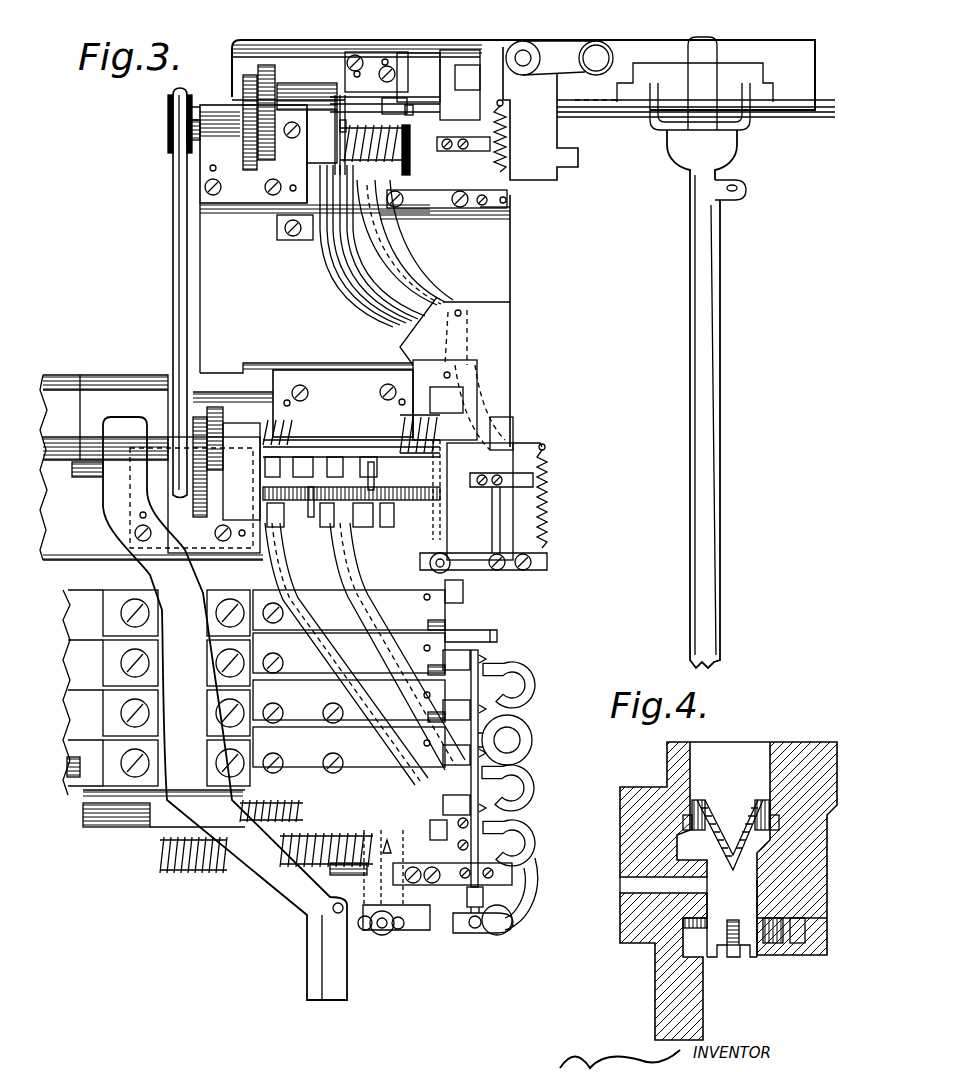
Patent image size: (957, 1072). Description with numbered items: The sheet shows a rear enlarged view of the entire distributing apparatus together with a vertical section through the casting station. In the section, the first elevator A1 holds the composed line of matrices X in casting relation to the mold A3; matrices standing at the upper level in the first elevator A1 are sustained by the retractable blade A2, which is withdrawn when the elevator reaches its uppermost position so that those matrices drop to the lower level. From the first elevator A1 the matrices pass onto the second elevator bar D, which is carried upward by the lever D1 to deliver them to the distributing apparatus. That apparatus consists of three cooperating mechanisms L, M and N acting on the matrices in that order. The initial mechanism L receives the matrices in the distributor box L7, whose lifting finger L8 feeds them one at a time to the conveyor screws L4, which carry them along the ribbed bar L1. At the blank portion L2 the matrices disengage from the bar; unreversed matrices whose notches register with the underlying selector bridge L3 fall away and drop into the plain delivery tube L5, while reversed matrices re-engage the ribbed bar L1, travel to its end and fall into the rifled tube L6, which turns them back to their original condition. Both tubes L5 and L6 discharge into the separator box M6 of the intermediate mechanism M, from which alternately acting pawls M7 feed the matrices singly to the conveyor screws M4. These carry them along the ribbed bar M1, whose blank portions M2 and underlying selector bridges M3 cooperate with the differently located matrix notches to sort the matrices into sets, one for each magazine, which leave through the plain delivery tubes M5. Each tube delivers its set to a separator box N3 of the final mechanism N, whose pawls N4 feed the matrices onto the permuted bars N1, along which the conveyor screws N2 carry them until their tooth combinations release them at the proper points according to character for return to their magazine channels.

In FIG. 3, the second elevator bar D is at (628, 118).
In FIG. 3, the lever D1 is at (708, 306).
In FIG. 3, the initial mechanism L is at (536, 129).
In FIG. 3, the ribbed bar L1 is at (367, 53).
In FIG. 3, the blank portion L2 is at (387, 102).
In FIG. 3, the selector bridge L3 is at (383, 163).
In FIG. 3, the conveyor screws L4 is at (370, 140).
In FIG. 3, the plain delivery tube L5 is at (405, 252).
In FIG. 3, the rifled delivery tube L6 is at (320, 250).
In FIG. 3, the distributor box L7 is at (454, 137).
In FIG. 3, the lifting finger L8 is at (410, 158).
In FIG. 3, the matrices X is at (410, 108).
In FIG. 4, the matrices X is at (720, 918).
In FIG. 3, the intermediate mechanism M is at (475, 405).
In FIG. 3, the ribbed bar M1 is at (343, 403).
In FIG. 3, the blank portions M2 is at (320, 432).
In FIG. 3, the selector bridges M3 is at (283, 517).
In FIG. 3, the conveyor screws M4 is at (423, 480).
In FIG. 3, the plain delivery tubes M5 is at (372, 550).
In FIG. 3, the separator box M6 is at (483, 508).
In FIG. 3, the alternately acting pawls M7 is at (442, 507).
In FIG. 3, the final mechanism N is at (203, 708).
In FIG. 3, the permuted bars N1 is at (83, 812).
In FIG. 3, the conveyor screws N2 is at (160, 850).
In FIG. 3, the separator boxes N3 is at (428, 932).
In FIG. 3, the pawls N4 is at (388, 845).
In FIG. 4, the first elevator A1 is at (770, 756).
In FIG. 4, the retractable blade A2 is at (777, 933).
In FIG. 4, the mold A3 is at (623, 913).